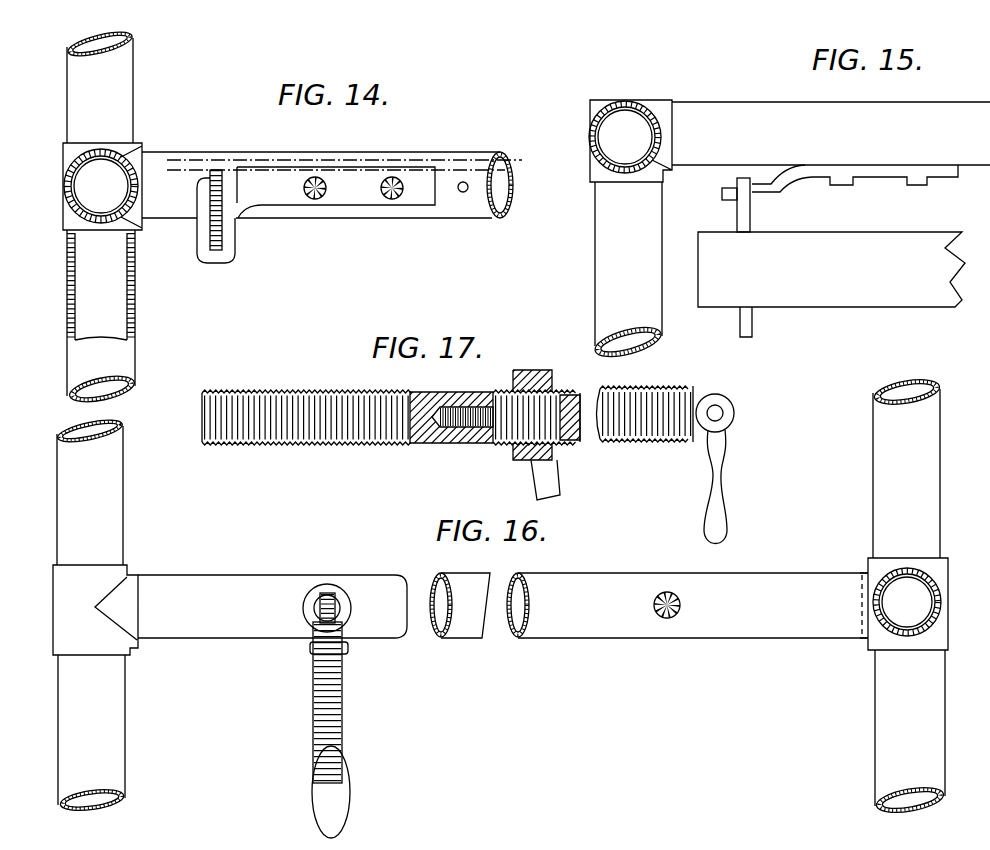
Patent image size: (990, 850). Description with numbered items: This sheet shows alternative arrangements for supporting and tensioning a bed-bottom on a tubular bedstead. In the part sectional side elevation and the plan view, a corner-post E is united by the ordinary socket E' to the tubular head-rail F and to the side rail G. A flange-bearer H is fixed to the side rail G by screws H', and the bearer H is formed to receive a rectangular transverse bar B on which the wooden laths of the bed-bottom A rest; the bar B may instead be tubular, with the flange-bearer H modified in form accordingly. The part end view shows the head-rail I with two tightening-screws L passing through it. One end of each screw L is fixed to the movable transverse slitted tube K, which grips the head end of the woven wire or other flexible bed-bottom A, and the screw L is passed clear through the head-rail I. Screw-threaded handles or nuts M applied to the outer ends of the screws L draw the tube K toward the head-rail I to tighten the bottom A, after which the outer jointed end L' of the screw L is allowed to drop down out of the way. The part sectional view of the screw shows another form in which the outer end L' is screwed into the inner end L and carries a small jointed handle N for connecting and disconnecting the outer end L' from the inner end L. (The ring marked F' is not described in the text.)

In FIG. 14, the corner-post E is at (101, 216).
In FIG. 16, the corner-post E is at (500, 595).
In FIG. 14, the socket E' is at (91, 186).
In FIG. 15, the socket E' is at (630, 141).
In FIG. 16, the socket E' is at (95, 610).
In FIG. 14, the ring collar F' is at (101, 186).
In FIG. 14, the bed-bottom A is at (522, 160).
In FIG. 15, the bed-bottom A is at (850, 282).
In FIG. 14, the screws H' is at (336, 192).
In FIG. 14, the transverse bar B is at (215, 218).
In FIG. 15, the transverse bar B is at (752, 315).
In FIG. 14, the flange-bearers H is at (216, 230).
In FIG. 15, the flange-bearers H is at (855, 188).
In FIG. 15, the side rail G is at (831, 133).
In FIG. 16, the side rail G is at (922, 590).
In FIG. 15, the tubular head-rail F is at (628, 272).
In FIG. 17, the screws L is at (391, 450).
In FIG. 16, the screws L is at (491, 607).
In FIG. 17, the screw-threaded handles or nuts M is at (592, 484).
In FIG. 16, the screw-threaded handles or nuts M is at (352, 793).
In FIG. 17, the outer jointed end of screw L' is at (645, 428).
In FIG. 16, the outer jointed end of screw L' is at (341, 702).
In FIG. 17, the small jointed handle N is at (745, 500).
In FIG. 16, the head-rail I is at (212, 620).
In FIG. 16, the movable transverse slitted tube K is at (778, 617).